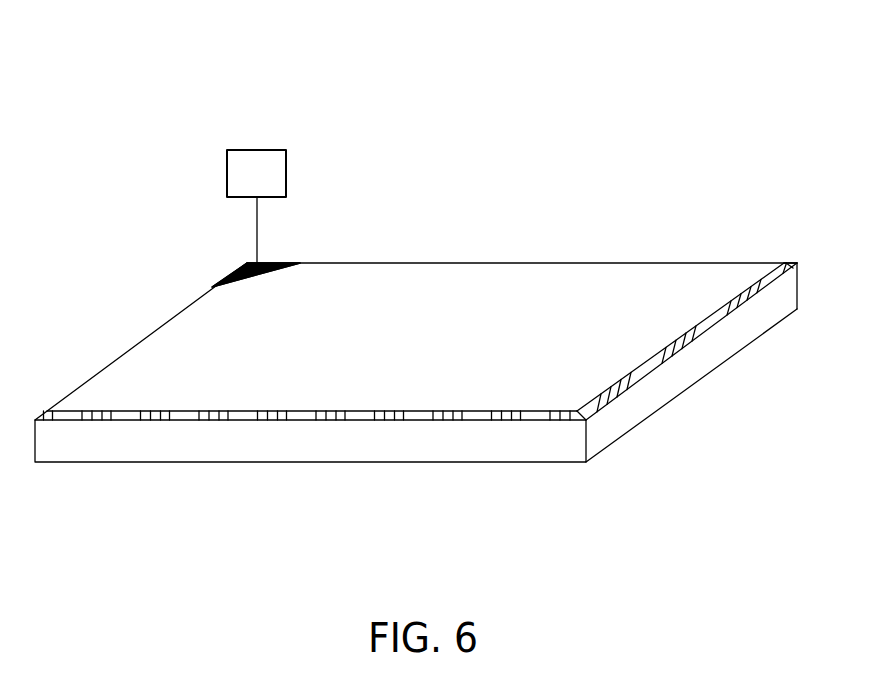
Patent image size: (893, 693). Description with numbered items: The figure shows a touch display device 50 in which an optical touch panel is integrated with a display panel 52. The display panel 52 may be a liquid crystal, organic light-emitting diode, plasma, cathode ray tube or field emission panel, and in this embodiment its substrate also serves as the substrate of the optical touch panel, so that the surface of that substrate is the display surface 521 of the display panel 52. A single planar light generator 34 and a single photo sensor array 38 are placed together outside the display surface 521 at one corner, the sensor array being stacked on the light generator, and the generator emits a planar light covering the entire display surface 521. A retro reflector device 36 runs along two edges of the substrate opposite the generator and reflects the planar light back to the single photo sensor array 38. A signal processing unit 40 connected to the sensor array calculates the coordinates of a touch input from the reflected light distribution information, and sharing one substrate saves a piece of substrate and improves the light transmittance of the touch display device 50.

The touch display device 50 is at (689, 92).
The display panel 52 is at (632, 407).
The display surface 521 is at (465, 288).
The retro reflector device 36 is at (623, 377).
The single planar light generator 34 is at (268, 262).
The single photo sensor array 38 is at (256, 275).
The signal processing unit 40 is at (270, 188).